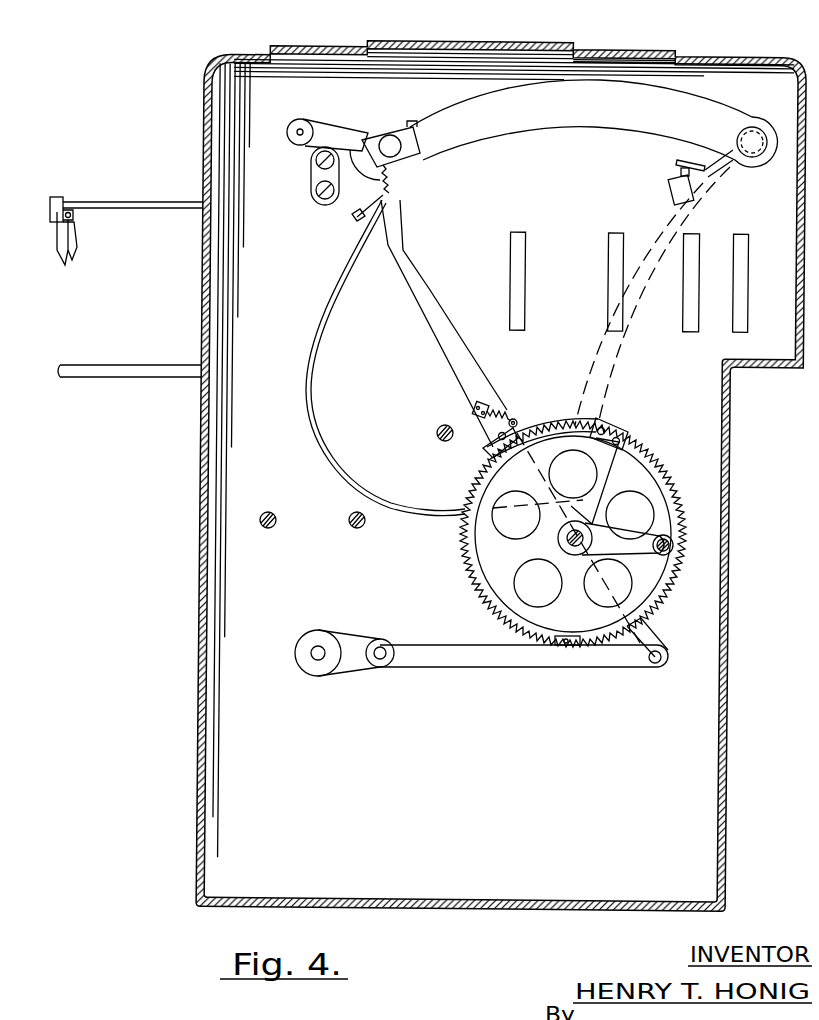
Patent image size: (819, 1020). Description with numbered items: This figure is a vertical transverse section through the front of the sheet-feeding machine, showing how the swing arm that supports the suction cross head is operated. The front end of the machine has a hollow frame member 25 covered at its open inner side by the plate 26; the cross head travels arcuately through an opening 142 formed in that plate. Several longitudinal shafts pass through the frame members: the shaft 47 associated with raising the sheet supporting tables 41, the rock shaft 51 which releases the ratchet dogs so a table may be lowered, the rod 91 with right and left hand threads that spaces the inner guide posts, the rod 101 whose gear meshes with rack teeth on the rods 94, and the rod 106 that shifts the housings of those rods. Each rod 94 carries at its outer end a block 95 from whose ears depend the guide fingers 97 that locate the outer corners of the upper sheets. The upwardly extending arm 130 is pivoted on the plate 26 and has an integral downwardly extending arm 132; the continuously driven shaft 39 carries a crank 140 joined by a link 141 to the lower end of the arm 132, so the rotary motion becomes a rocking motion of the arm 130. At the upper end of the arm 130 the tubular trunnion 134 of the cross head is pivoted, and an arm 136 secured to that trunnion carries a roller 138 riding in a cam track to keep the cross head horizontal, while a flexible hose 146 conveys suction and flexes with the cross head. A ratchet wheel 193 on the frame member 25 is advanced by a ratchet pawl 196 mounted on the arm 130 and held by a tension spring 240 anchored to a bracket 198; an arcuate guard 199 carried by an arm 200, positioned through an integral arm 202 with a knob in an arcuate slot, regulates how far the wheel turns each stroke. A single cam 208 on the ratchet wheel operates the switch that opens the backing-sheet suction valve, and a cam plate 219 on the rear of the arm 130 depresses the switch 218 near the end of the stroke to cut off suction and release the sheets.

The hollow frame member 25 is at (334, 46).
The plate 26 is at (528, 801).
The shaft 39 is at (316, 656).
The sheet supporting table 41 is at (90, 372).
The shaft 47 is at (265, 511).
The rock shaft 51 is at (362, 528).
The rod 91 is at (437, 432).
The rod 94 is at (167, 202).
The block 95 is at (50, 204).
The guide finger 97 is at (66, 246).
The rod 101 is at (315, 191).
The rod 106 is at (317, 158).
The upwardly extending arm 130 is at (440, 347).
The downwardly extending arm 132 is at (650, 650).
The tubular trunnion 134 is at (396, 135).
The arm 136 is at (342, 131).
The roller 138 is at (303, 121).
The crank 140 is at (352, 662).
The link 141 is at (485, 655).
The opening 142 is at (525, 85).
The flexible hose 146 is at (319, 349).
The ratchet wheel 193 is at (651, 458).
The ratchet pawl 196 is at (487, 447).
The bracket 198 is at (478, 402).
The guard 199 is at (546, 420).
The arm 200 is at (600, 462).
The arm 202 is at (631, 540).
The cam 208 is at (568, 645).
The switch 218 is at (669, 181).
The cam plate 219 is at (355, 218).
The tension spring 240 is at (509, 420).